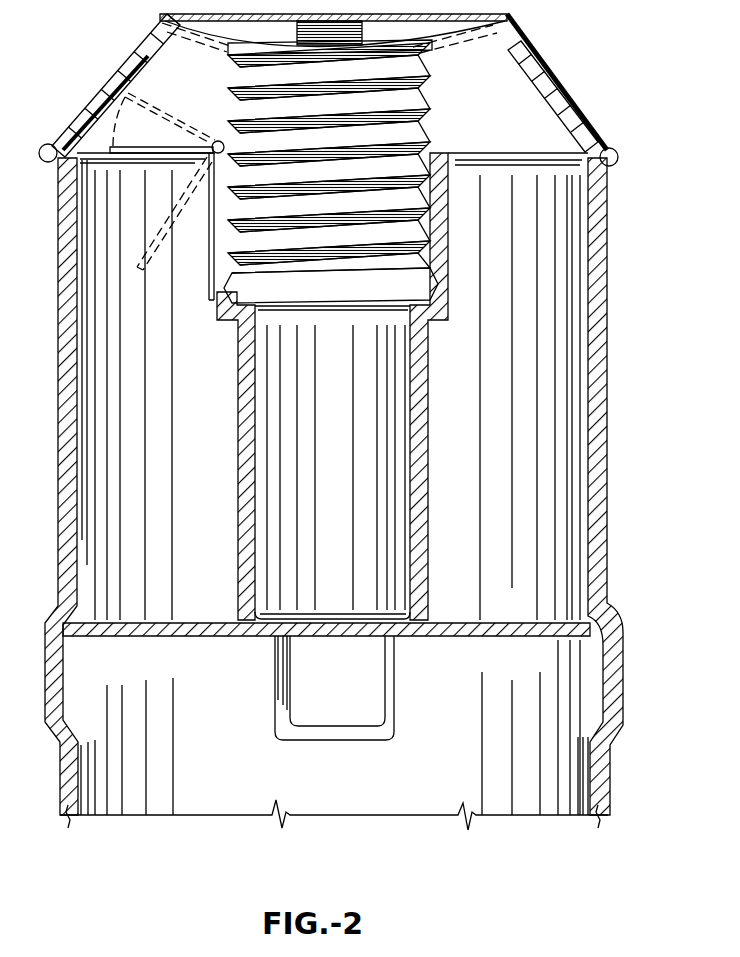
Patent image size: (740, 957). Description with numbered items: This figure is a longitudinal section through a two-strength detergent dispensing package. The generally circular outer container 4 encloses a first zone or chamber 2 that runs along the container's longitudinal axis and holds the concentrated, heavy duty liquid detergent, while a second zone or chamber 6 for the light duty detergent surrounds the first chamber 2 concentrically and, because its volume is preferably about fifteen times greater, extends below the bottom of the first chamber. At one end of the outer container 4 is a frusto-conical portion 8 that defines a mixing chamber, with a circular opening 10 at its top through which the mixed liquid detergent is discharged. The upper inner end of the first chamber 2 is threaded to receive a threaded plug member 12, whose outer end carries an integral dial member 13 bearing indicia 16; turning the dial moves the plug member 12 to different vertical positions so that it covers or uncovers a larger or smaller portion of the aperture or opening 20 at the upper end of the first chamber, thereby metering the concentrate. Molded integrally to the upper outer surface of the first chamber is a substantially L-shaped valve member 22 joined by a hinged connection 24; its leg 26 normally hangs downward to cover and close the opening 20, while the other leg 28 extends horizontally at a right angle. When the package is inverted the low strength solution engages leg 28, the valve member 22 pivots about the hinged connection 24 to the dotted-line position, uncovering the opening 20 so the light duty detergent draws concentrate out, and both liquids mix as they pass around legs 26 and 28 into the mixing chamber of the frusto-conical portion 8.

The first zone or chamber 2 is at (326, 490).
The outer container 4 is at (606, 447).
The second zone or chamber 6 is at (485, 490).
The frusto-conical portion 8 is at (549, 117).
The circular opening 10 is at (454, 46).
The threaded plug member 12 is at (431, 122).
The dial member 13 is at (540, 50).
The indicia 16 is at (437, 708).
The aperture or opening 20 is at (236, 290).
The L-shaped valve member 22 is at (160, 192).
The hinged connection 24 is at (219, 141).
The leg of the valve member 26 is at (208, 294).
The other leg of the valve member 28 is at (124, 148).